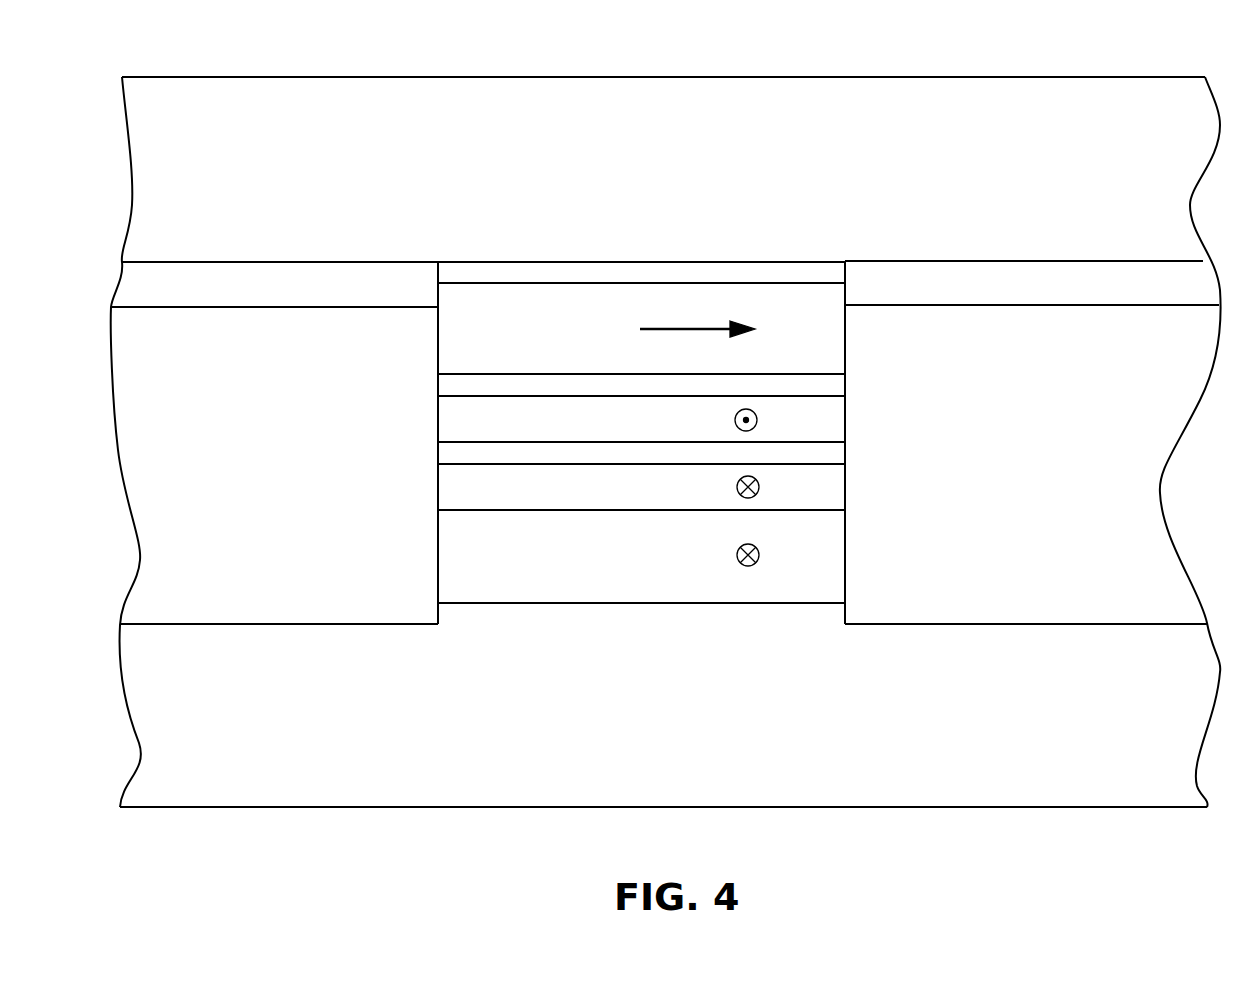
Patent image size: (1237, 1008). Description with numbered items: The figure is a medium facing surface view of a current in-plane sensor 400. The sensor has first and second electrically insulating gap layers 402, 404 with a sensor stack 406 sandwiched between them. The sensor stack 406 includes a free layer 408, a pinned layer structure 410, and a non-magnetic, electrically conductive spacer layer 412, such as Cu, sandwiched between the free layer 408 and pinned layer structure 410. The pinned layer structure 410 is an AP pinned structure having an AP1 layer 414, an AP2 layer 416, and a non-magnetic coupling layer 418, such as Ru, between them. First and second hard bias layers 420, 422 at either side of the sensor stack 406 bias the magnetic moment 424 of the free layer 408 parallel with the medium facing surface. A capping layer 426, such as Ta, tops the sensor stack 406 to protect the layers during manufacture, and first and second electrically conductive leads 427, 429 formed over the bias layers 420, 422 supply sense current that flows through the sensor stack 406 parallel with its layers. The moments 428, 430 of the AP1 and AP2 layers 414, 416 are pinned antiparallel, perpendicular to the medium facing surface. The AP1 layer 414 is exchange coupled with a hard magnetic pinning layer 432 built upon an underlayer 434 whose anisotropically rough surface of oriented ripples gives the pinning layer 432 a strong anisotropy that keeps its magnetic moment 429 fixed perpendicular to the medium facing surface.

The CIP sensor 400 is at (987, 63).
The first electrically insulating gap layer 402 is at (575, 718).
The second electrically insulating gap layer 404 is at (720, 152).
The sensor stack 406 is at (848, 352).
The free layer 408 is at (597, 326).
The pinned layer structure 410 is at (405, 395).
The spacer layer 412 is at (703, 385).
The AP1 layer 414 is at (568, 484).
The AP2 layer 416 is at (570, 413).
The coupling layer 418 is at (703, 455).
The first hard bias layer 420 is at (1103, 382).
The second hard bias layer 422 is at (340, 392).
The magnetic moment of the free layer 424 is at (665, 329).
The capping layer 426 is at (720, 272).
The first electrically conductive lead 427 is at (1013, 283).
The magnetic moment of the AP1 layer 428 is at (760, 488).
The second electrically conductive lead 429 is at (307, 279).
The magnetic moment of the AP2 layer 430 is at (758, 421).
The hard magnetic pinning layer 432 is at (697, 552).
The underlayer 434 is at (693, 613).